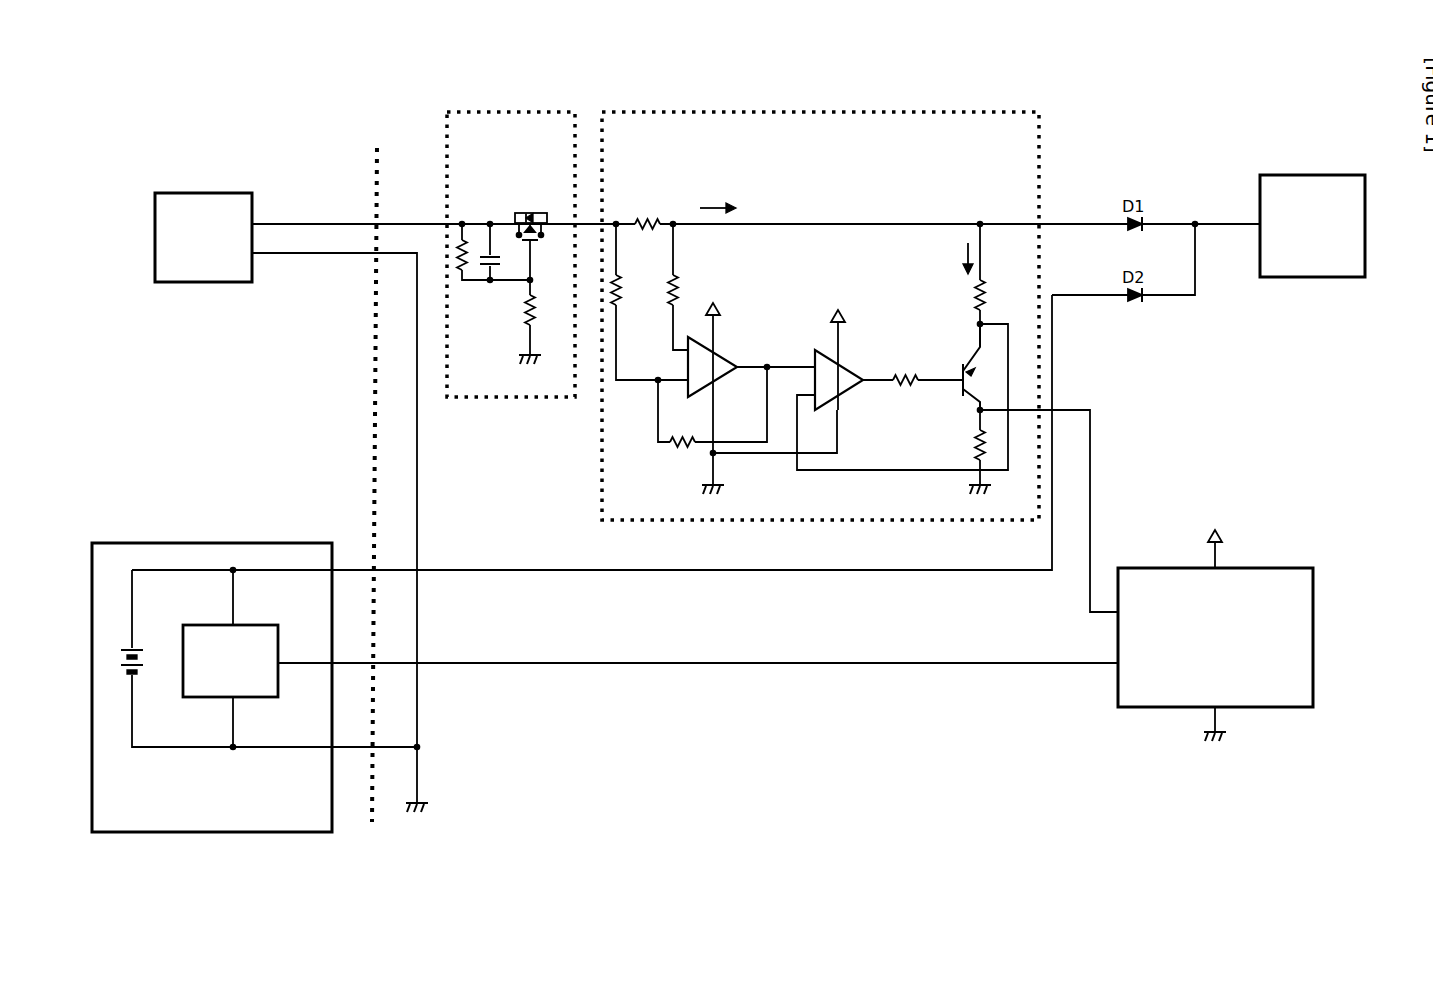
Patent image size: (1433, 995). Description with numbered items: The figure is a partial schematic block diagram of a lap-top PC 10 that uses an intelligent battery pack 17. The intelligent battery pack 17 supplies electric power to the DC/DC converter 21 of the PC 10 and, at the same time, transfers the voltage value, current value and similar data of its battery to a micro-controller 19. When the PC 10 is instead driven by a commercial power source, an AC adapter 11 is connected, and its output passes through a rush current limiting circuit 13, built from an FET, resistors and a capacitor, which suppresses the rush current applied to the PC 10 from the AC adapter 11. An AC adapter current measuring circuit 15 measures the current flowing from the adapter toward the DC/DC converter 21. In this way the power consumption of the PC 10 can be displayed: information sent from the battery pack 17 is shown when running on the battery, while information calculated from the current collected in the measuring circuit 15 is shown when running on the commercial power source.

The PC 10 is at (1130, 131).
The AC adapter 11 is at (198, 192).
The rush current limiting circuit 13 is at (512, 110).
The AC adapter current measuring circuit 15 is at (681, 110).
The intelligent battery pack 17 is at (166, 541).
The micro-controller 19 is at (1266, 568).
The DC/DC converter 21 is at (1333, 174).